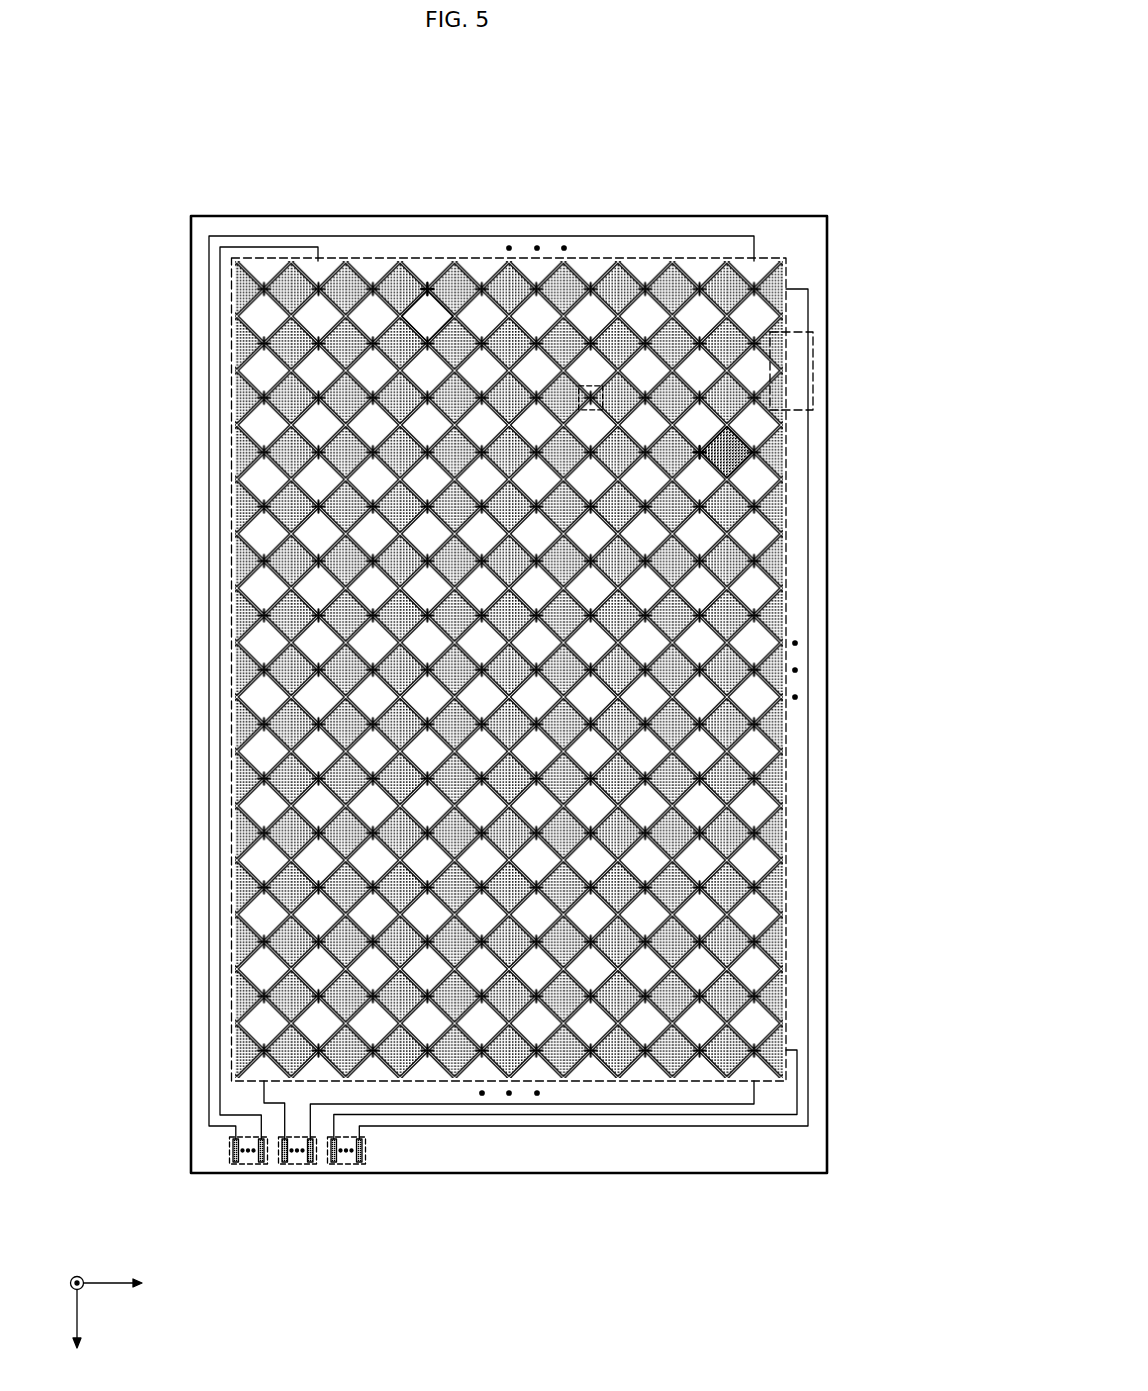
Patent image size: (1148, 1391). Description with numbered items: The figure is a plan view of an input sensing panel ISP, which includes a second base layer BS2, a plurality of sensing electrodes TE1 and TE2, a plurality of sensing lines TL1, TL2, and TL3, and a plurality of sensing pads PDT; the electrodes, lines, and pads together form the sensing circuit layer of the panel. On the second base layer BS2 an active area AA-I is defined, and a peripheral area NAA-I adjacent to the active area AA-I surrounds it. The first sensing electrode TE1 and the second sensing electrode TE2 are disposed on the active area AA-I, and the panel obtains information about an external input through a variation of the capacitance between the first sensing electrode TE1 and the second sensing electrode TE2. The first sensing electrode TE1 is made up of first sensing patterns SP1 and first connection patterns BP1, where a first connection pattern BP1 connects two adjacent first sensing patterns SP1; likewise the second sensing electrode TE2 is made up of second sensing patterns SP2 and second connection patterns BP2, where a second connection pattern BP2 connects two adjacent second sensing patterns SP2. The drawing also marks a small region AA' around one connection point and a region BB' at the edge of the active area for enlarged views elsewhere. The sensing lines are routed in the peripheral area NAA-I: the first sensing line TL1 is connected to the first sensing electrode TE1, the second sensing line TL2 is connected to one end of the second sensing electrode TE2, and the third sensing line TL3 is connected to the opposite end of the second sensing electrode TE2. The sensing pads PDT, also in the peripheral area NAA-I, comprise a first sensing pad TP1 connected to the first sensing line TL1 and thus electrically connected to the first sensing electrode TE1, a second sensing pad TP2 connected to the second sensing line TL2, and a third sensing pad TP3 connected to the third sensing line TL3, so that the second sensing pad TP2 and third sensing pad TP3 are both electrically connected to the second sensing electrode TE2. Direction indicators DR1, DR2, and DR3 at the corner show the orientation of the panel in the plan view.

The input sensing panel ISP is at (767, 130).
The second sensing electrode TE2 is at (490, 165).
The second sensing pattern SP2 is at (422, 312).
The second connection pattern BP2 is at (430, 289).
The enlarged region AA' is at (601, 286).
The enlarged region BB' is at (831, 371).
The active area AA-I is at (231, 485).
The peripheral area NAA-I is at (191, 526).
The third sensing line TL3 is at (209, 604).
The second base layer BS2 is at (191, 690).
The first sensing pattern SP1 is at (735, 460).
The first connection pattern BP1 is at (700, 456).
The first sensing electrode TE1 is at (897, 457).
The first sensing line TL1 is at (808, 607).
The second sensing line TL2 is at (397, 1105).
The first sensing pad TP1 is at (340, 1165).
The second sensing pad TP2 is at (290, 1165).
The third sensing pad TP3 is at (256, 1165).
The sensing pads PDT is at (363, 1237).
The first direction DR1 is at (83, 1331).
The second direction DR2 is at (136, 1284).
The third direction DR3 is at (83, 1269).